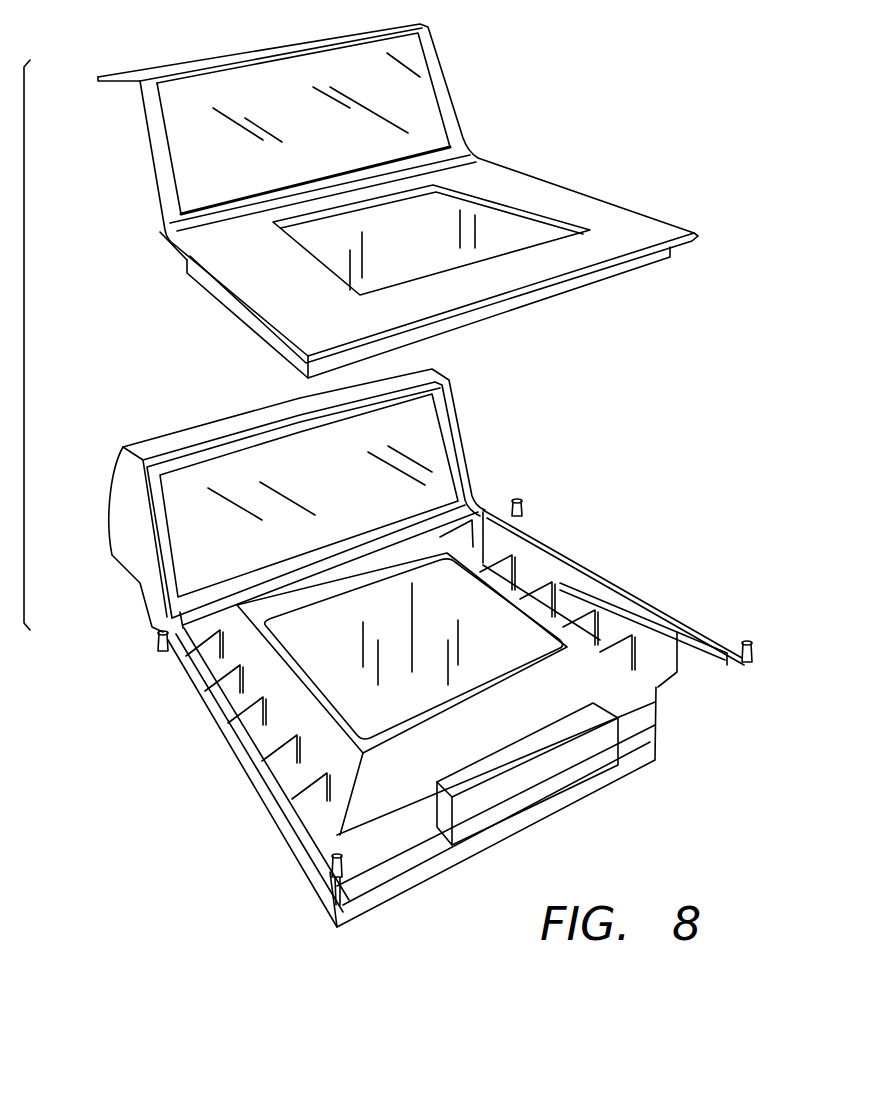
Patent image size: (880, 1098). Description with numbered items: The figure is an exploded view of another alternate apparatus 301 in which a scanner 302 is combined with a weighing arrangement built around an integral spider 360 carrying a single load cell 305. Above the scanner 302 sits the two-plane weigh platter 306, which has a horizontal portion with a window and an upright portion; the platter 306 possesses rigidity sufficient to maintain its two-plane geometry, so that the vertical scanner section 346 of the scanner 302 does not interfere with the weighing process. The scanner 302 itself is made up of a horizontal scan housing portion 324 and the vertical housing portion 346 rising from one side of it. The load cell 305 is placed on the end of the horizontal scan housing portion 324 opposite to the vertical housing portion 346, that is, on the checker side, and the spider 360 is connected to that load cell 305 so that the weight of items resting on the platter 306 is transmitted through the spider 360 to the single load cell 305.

The alternate apparatus 301 is at (668, 361).
The scanner 302 is at (186, 698).
The load cell 305 is at (563, 777).
The two-plane weigh platter 306 is at (556, 187).
The horizontal scan housing portion 324 is at (307, 762).
The vertical scanner section 346 is at (132, 528).
The integral spider 360 is at (640, 588).